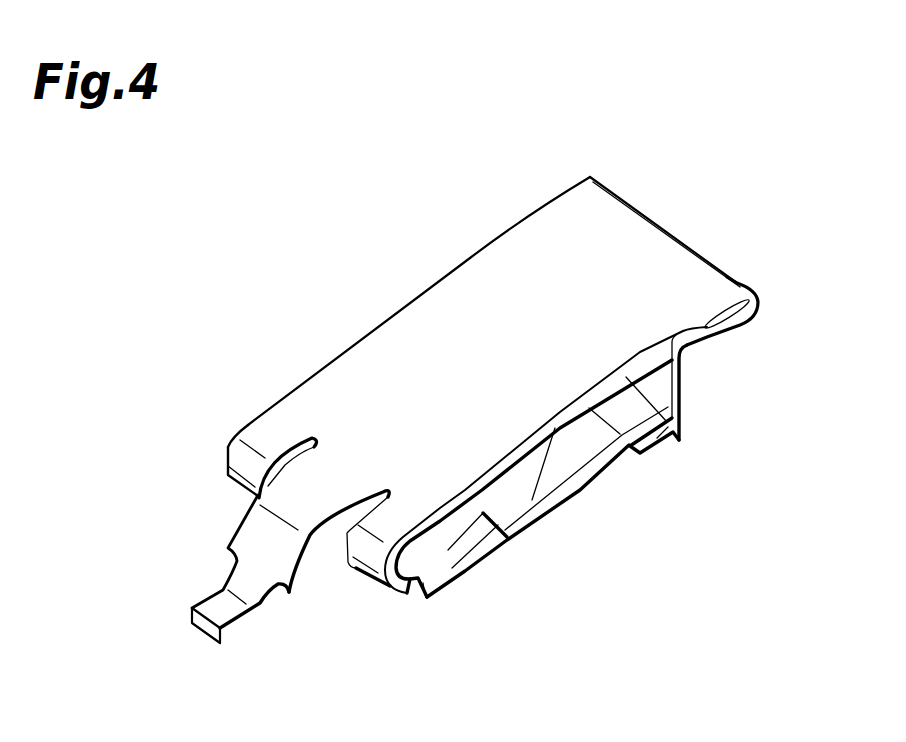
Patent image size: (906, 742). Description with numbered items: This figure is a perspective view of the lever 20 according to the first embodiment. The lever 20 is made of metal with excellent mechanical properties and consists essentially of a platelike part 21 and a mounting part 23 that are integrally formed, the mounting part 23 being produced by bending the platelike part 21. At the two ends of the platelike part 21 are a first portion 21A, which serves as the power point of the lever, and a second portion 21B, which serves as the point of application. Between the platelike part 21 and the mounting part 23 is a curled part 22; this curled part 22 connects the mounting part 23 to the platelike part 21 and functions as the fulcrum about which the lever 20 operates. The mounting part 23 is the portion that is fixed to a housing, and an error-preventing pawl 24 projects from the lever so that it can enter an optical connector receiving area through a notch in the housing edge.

The lever 20 is at (508, 199).
The platelike part 21 is at (422, 312).
The first portion 21A is at (648, 250).
The second portion 21B is at (215, 602).
The curled part 22 is at (404, 598).
The mounting part 23 is at (516, 504).
The error-preventing pawl 24 is at (683, 393).